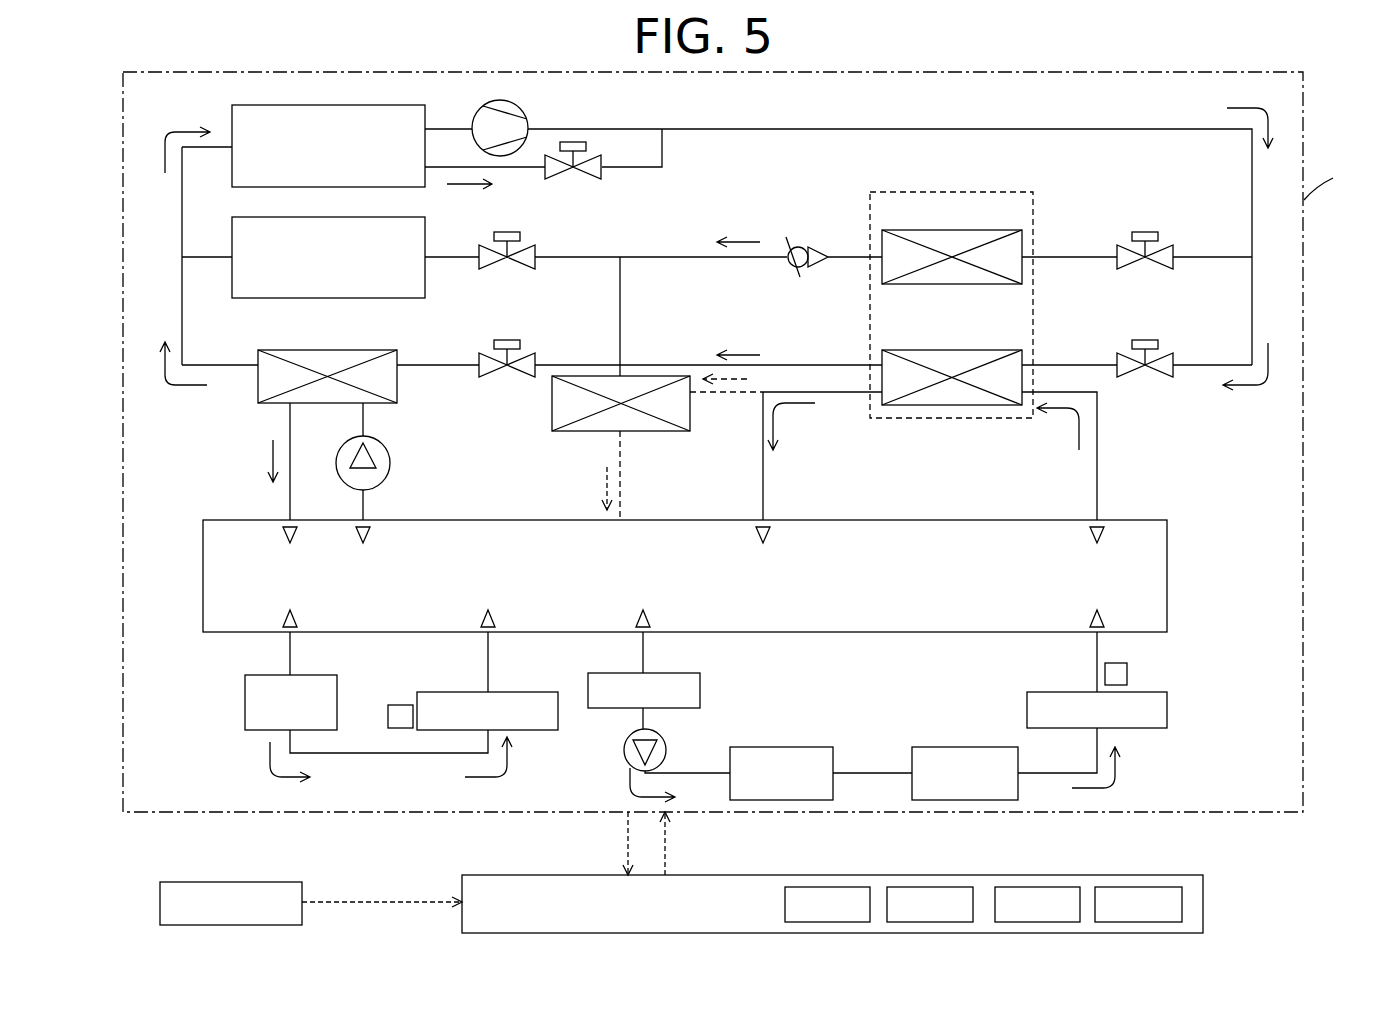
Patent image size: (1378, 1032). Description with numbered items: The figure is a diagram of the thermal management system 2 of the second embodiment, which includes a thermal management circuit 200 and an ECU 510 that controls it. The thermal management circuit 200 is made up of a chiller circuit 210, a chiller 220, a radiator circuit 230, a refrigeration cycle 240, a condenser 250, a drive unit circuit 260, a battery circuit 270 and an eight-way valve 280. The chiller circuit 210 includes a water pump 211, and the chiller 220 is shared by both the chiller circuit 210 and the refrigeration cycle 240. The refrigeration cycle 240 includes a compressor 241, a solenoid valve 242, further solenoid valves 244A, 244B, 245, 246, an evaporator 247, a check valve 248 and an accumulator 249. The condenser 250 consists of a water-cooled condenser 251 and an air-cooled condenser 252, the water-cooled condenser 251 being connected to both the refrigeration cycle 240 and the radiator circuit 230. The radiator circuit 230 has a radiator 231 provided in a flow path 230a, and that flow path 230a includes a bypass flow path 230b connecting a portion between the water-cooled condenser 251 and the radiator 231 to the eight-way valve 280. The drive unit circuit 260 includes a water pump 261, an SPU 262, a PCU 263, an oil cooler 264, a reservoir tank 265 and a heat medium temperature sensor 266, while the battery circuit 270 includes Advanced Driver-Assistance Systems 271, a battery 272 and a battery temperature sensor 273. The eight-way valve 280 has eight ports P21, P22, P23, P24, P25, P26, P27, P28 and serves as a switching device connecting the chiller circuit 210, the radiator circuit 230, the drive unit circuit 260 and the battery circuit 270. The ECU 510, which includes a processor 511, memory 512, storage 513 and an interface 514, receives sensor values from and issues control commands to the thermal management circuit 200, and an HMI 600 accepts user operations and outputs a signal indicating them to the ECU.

The thermal management system 2 is at (108, 87).
The thermal management circuit 200 is at (1333, 174).
The chiller circuit 210 is at (417, 437).
The water pump 211 is at (392, 466).
The chiller 220 is at (360, 350).
The radiator circuit 230 is at (563, 449).
The flow path 230a is at (590, 464).
The bypass flow path 230b is at (763, 477).
The radiator 231 is at (552, 412).
The refrigeration cycle 240 is at (932, 122).
The compressor 241 is at (512, 103).
The solenoid valve 242 is at (588, 176).
The solenoid valve 244A is at (1158, 232).
The solenoid valve 244B is at (1158, 342).
The solenoid valve 245 is at (515, 232).
The solenoid valve 246 is at (515, 340).
The evaporator 247 is at (358, 216).
The check valve 248 is at (801, 246).
The accumulator 249 is at (358, 104).
The condenser 250 is at (968, 193).
The water-cooled condenser 251 is at (968, 351).
The air-cooled condenser 252 is at (968, 231).
The drive unit circuit 260 is at (926, 709).
The water pump 261 is at (663, 736).
The SPU 262 is at (815, 747).
The PCU 263 is at (960, 747).
The oil cooler 264 is at (1145, 692).
The reservoir tank 265 is at (670, 673).
The heat medium temperature sensor 266 is at (1122, 664).
The battery circuit 270 is at (507, 675).
The Advanced Driver-Assistance Systems 271 is at (315, 675).
The battery 272 is at (520, 692).
The battery temperature sensor 273 is at (394, 705).
The eight-way valve 280 is at (813, 520).
The ECU 510 is at (1173, 875).
The processor 511 is at (826, 887).
The memory 512 is at (937, 887).
The storage 513 is at (1038, 887).
The interface 514 is at (1143, 887).
The HMI 600 is at (240, 882).
The port P21 is at (283, 615).
The port P22 is at (1090, 618).
The port P23 is at (373, 537).
The port P24 is at (480, 615).
The port P25 is at (280, 537).
The port P26 is at (1103, 533).
The port P27 is at (753, 532).
The port P28 is at (635, 620).